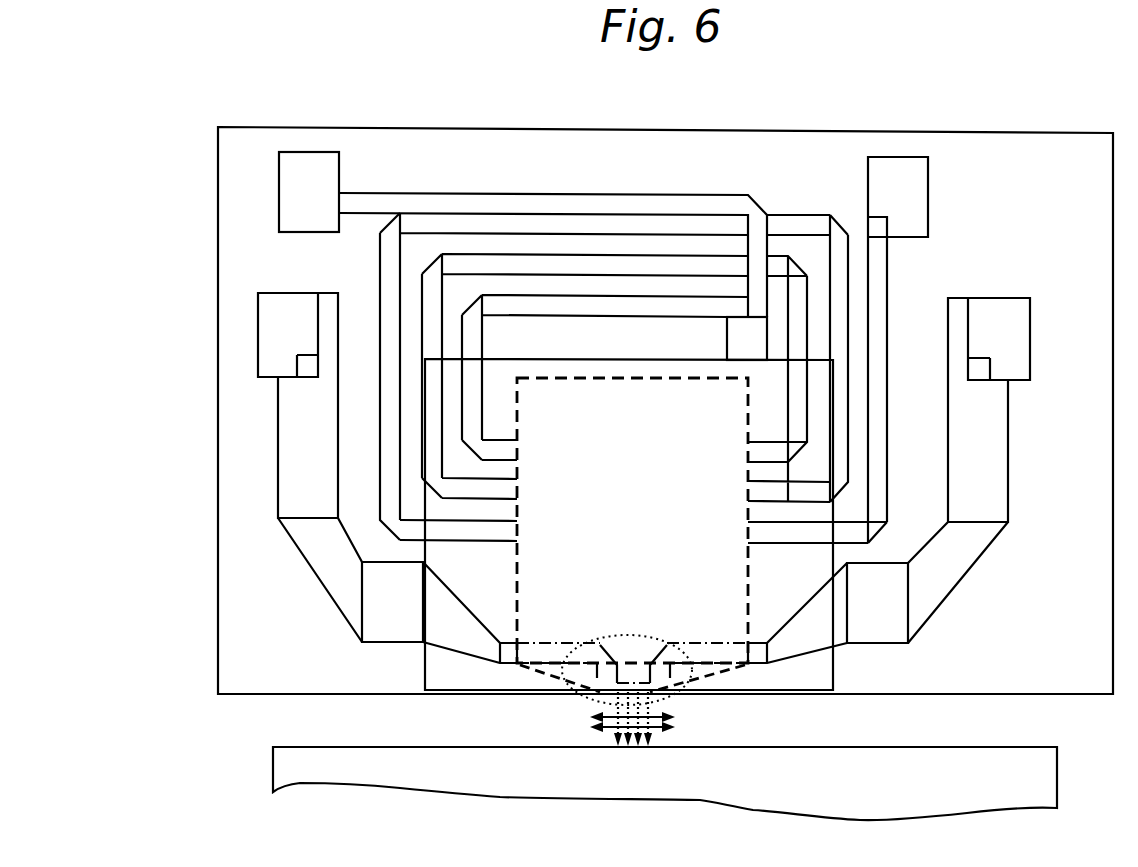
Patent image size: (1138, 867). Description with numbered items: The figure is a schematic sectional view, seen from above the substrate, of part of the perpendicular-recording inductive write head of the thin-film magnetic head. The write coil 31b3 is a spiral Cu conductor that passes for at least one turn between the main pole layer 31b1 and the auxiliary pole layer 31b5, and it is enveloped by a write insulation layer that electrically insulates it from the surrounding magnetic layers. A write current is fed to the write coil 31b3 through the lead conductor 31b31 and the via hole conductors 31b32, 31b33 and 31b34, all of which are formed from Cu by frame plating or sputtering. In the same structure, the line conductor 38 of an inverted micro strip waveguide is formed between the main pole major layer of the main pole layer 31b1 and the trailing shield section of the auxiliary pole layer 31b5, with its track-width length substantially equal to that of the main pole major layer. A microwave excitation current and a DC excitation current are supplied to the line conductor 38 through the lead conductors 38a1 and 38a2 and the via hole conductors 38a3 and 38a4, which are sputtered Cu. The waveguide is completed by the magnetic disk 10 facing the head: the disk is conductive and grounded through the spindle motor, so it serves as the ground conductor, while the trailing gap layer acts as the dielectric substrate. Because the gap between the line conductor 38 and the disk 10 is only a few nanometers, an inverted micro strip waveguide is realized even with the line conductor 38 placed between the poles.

The magnetic disk 10 is at (1047, 772).
The line conductor 38 is at (645, 680).
The lead conductor 38a1 is at (393, 628).
The lead conductor 38a2 is at (933, 573).
The via hole conductor 38a3 is at (290, 312).
The via hole conductor 38a4 is at (1000, 310).
The main pole layer 31b1 is at (827, 665).
The write coil 31b3 is at (810, 227).
The lead conductor 31b31 is at (707, 207).
The via hole conductor 31b32 is at (758, 340).
The via hole conductor 31b33 is at (893, 172).
The via hole conductor 31b34 is at (313, 168).
The auxiliary pole layer 31b5 is at (603, 395).